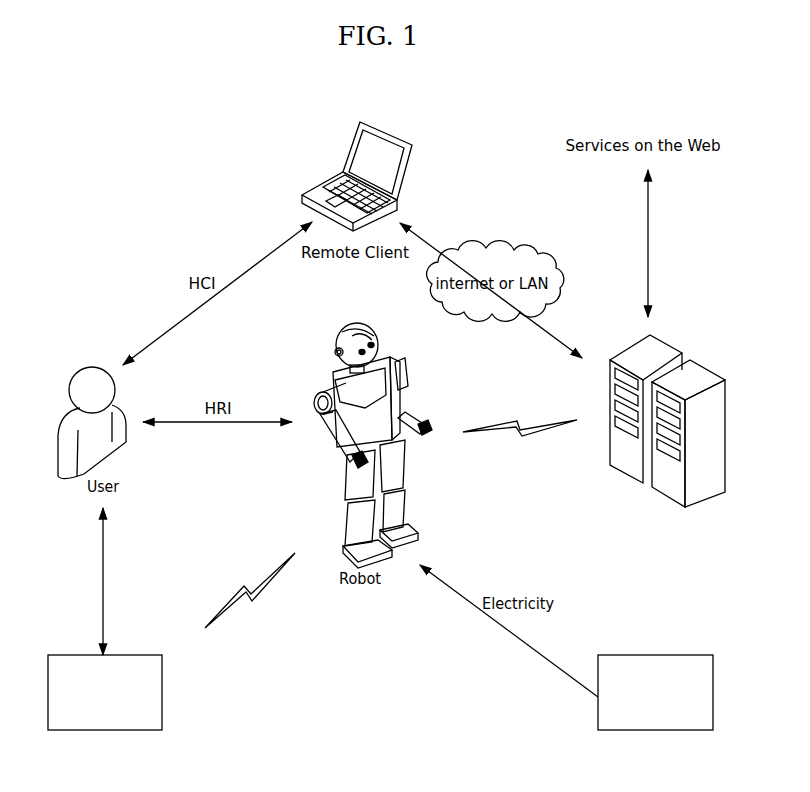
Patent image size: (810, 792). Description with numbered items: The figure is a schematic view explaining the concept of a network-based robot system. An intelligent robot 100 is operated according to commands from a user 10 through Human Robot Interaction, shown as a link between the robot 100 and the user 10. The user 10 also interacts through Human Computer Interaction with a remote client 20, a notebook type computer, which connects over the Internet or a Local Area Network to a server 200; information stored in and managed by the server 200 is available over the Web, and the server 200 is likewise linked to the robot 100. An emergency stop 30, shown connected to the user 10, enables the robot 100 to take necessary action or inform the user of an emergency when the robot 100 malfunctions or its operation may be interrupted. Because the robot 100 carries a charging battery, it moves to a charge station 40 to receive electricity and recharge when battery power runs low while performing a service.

The user 10 is at (80, 378).
The remote client 20 is at (316, 196).
The emergency stop 30 is at (58, 655).
The charge station 40 is at (705, 655).
The intelligent robot 100 is at (335, 368).
The server 200 is at (700, 370).